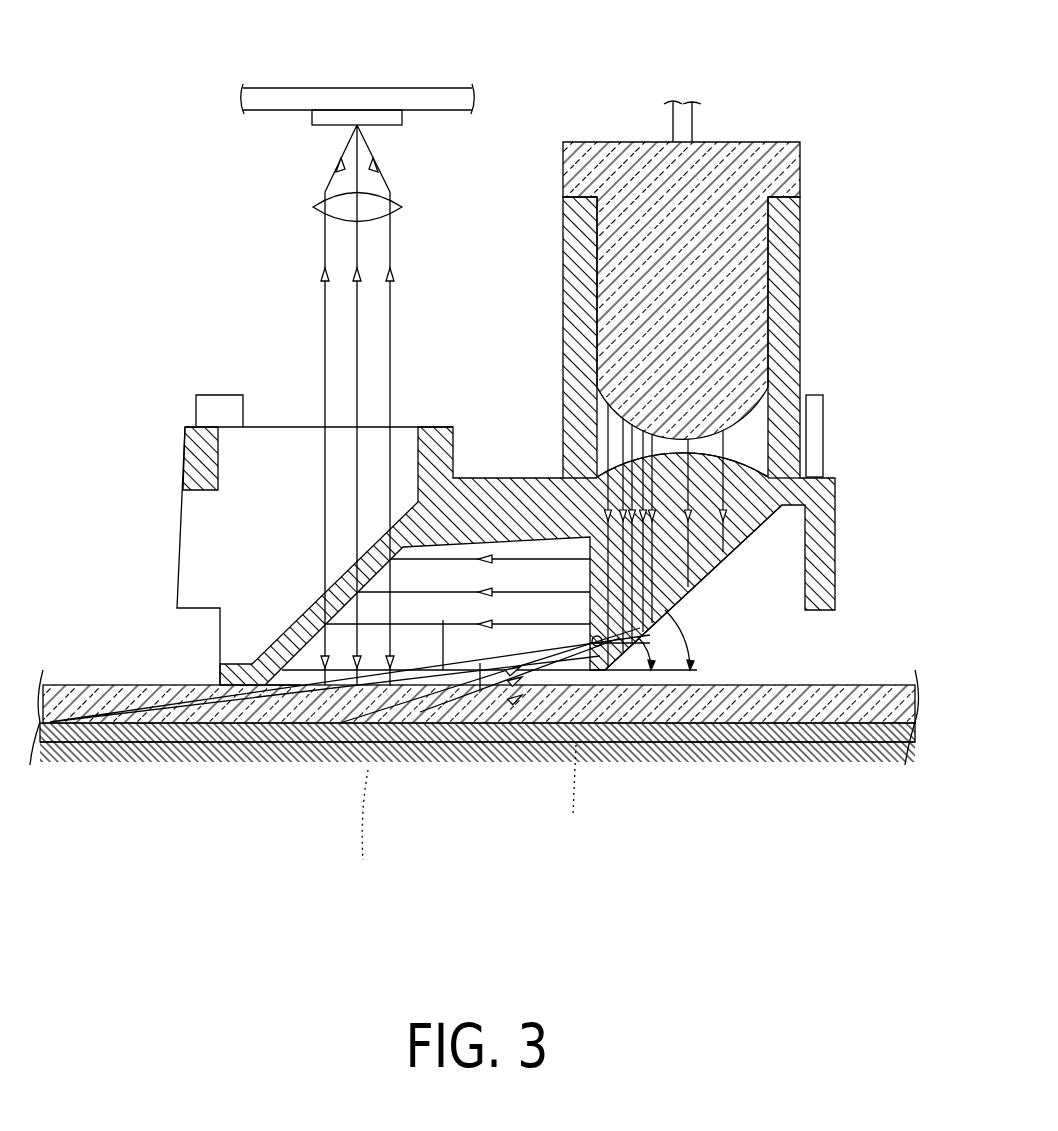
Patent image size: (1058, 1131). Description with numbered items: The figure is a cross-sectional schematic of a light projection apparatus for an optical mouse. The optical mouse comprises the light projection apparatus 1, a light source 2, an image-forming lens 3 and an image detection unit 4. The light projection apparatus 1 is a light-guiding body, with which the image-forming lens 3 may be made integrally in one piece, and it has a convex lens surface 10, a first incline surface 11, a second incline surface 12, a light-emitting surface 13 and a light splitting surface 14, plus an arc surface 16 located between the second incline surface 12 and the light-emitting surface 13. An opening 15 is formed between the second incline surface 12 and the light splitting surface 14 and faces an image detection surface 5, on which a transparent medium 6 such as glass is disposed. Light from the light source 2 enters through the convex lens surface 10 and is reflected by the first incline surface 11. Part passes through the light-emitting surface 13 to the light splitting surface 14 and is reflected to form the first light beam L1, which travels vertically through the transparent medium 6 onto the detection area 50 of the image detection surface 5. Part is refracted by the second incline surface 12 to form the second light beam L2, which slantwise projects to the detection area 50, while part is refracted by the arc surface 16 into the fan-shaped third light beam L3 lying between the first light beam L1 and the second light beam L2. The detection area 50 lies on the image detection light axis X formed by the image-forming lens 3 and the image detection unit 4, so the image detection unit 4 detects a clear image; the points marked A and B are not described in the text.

The light projection apparatus 1 is at (713, 483).
The light source 2 is at (723, 258).
The image-forming lens 3 is at (313, 205).
The image detection unit 4 is at (333, 118).
The convex lens surface 10 is at (705, 442).
The first incline surface 11 is at (713, 572).
The second incline surface 12 is at (597, 648).
The light-emitting surface 13 is at (443, 620).
The light splitting surface 14 is at (297, 685).
The opening 15 is at (590, 575).
The arc surface 16 is at (588, 650).
The image detection surface 5 is at (187, 728).
The detection area 50 is at (247, 748).
The transparent medium 6 is at (128, 730).
The first light beam L1 is at (360, 637).
The second light beam L2 is at (387, 622).
The third light beam L3 is at (417, 655).
The image detection light axis X is at (357, 318).
The point A is at (569, 796).
The point B is at (369, 838).